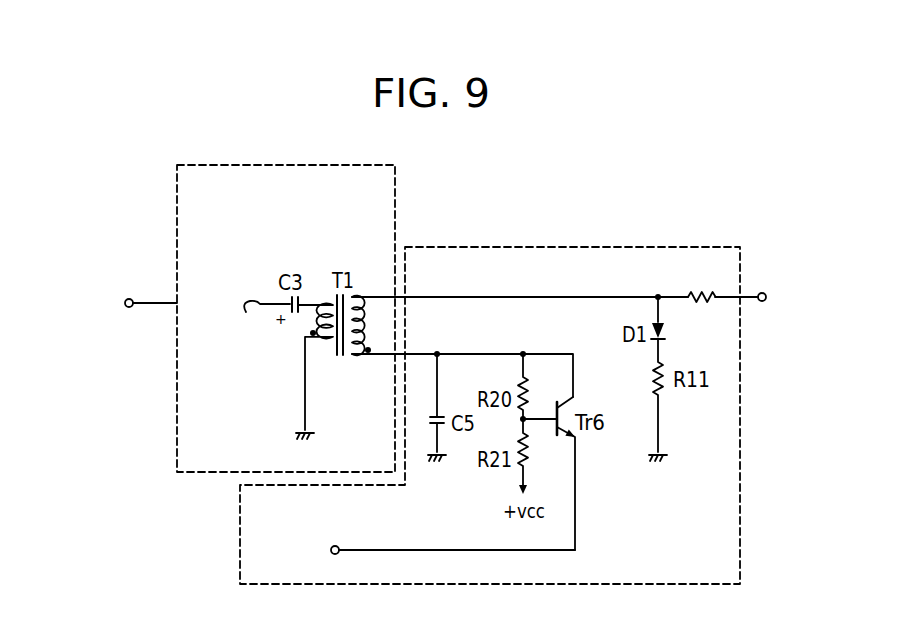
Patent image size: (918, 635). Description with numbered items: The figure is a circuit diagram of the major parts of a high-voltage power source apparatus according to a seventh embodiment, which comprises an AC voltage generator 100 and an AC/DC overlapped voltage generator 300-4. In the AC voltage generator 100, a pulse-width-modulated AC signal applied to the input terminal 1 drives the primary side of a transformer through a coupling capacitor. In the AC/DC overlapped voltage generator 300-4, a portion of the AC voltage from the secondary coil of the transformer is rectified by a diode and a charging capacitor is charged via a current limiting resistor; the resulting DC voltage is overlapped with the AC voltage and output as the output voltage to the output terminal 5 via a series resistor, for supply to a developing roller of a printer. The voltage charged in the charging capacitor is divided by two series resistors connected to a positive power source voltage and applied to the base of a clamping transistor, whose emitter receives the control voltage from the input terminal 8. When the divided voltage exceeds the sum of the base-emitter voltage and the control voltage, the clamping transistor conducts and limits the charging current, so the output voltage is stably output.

The input terminal 1 is at (129, 299).
The output terminal 5 is at (762, 293).
The input terminal 8 is at (335, 546).
The AC voltage generator 100 is at (395, 207).
The AC/DC overlapped voltage generator 300-4 is at (650, 247).